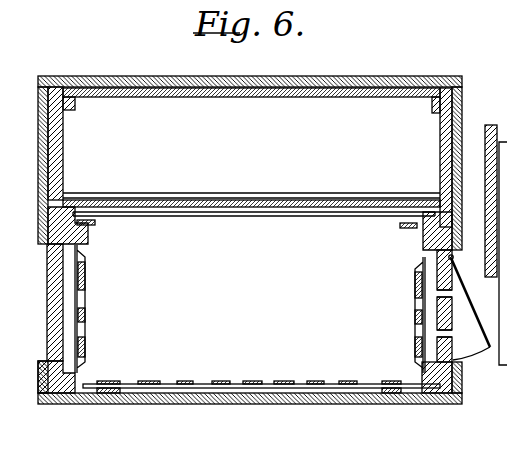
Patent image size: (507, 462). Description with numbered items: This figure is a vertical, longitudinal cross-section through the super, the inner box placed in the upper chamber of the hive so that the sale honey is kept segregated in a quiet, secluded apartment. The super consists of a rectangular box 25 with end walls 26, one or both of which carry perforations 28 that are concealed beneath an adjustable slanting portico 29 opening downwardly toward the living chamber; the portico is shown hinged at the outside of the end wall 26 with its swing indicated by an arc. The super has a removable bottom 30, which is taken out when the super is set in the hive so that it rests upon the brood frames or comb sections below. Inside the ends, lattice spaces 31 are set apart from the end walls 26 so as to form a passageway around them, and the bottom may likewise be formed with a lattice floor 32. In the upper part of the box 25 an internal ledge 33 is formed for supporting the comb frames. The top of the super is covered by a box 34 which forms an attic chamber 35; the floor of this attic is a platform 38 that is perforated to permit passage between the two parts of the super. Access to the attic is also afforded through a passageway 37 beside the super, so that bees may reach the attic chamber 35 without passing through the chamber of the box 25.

The rectangular box 25 is at (240, 298).
The end walls 26 is at (60, 319).
The perforations 28 is at (465, 323).
The adjustable slanting portico 29 is at (482, 353).
The removable bottom 30 is at (302, 404).
The lattice spaces 31 is at (82, 316).
The lattice floor 32 is at (222, 382).
The internal ledge 33 is at (90, 228).
The box 34 is at (63, 169).
The attic chamber 35 is at (246, 149).
The passageway 37 is at (499, 141).
The platform 38 is at (304, 200).